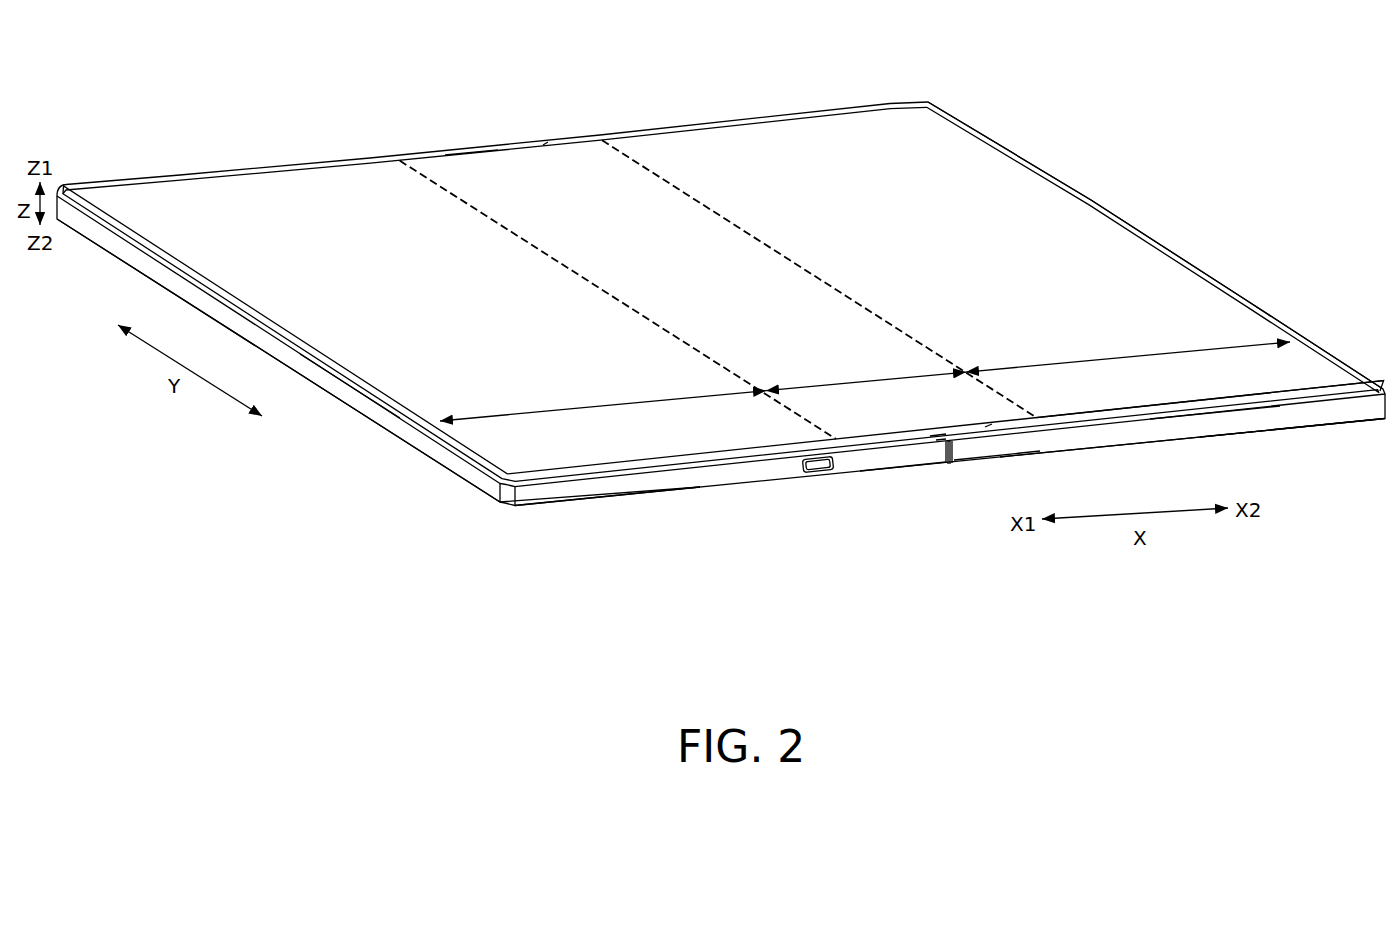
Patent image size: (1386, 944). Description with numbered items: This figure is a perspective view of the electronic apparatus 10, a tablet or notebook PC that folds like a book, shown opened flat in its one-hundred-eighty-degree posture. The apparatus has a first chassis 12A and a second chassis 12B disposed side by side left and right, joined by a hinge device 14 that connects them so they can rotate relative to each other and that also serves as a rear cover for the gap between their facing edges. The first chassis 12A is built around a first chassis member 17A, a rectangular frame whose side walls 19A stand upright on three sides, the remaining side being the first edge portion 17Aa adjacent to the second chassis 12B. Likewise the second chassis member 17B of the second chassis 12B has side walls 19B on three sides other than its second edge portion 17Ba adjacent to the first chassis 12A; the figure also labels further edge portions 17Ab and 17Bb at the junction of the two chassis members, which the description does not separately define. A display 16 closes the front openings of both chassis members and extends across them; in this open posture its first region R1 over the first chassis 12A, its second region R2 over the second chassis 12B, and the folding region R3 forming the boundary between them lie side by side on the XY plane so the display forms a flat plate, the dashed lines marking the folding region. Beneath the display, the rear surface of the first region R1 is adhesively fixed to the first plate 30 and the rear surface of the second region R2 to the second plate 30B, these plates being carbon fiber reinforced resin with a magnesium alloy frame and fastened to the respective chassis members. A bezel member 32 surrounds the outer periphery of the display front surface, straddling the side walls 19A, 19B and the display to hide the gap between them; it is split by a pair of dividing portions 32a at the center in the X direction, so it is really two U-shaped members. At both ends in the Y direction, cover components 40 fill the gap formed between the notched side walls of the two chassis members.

The electronic apparatus 10 is at (101, 86).
The first chassis 12A is at (650, 494).
The second chassis 12B is at (1282, 438).
The hinge device 14 is at (582, 170).
The display 16 is at (953, 175).
The first chassis member 17A is at (550, 503).
The first edge portion 17Aa is at (920, 465).
The first side edge inner portion 17Ab is at (950, 455).
The second chassis member 17B is at (1340, 421).
The second edge portion 17Ba is at (980, 458).
The second side edge inner portion 17Bb is at (947, 452).
The side walls 19A is at (365, 420).
The side walls 19B is at (1207, 428).
The display region 30 is at (240, 197).
The second plate 30B is at (805, 142).
The bezel member 32 is at (302, 161).
The dividing portion 32a is at (561, 100).
The cover component 40 is at (486, 147).
The first region R1 is at (603, 401).
The second region R2 is at (1128, 352).
The folding region R3 is at (866, 373).